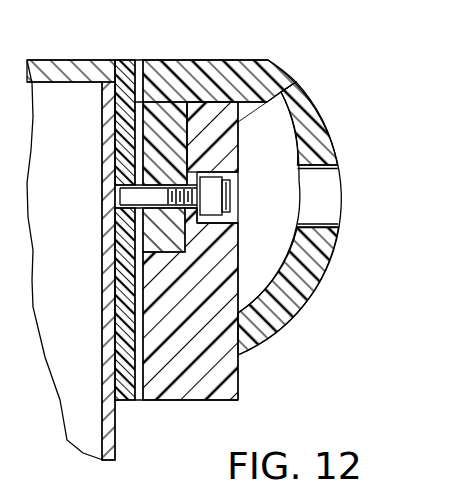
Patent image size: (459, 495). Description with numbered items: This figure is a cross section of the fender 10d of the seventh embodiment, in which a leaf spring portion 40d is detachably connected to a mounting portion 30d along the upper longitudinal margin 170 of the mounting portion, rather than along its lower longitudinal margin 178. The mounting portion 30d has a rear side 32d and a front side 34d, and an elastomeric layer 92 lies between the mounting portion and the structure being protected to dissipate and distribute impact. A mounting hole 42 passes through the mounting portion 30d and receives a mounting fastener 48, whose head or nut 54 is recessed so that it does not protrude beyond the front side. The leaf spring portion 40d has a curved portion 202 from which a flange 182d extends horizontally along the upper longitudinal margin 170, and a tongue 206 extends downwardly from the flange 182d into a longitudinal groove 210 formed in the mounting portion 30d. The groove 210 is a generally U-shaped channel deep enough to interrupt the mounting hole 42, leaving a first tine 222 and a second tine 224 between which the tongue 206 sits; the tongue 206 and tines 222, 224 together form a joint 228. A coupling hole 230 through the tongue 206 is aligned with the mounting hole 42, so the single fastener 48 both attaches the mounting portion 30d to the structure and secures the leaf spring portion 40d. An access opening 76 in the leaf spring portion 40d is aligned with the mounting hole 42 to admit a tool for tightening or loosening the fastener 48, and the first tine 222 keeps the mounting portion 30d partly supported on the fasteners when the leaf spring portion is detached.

The fender 10d is at (336, 52).
The elastomeric layer 92 is at (122, 402).
The rear side 32d is at (130, 311).
The joint 228 is at (141, 54).
The first tine 222 is at (138, 115).
The flange 182d is at (195, 65).
The tongue 206 is at (167, 157).
The upper longitudinal margin 170 is at (226, 85).
The second tine 224 is at (284, 100).
The curved portion 202 is at (323, 139).
The leaf spring portion 40d is at (324, 266).
The access opening 76 is at (323, 192).
The front side 34d is at (246, 270).
The mounting fastener 48 is at (215, 158).
The mounting portion 30d is at (212, 396).
The lower longitudinal margin 178 is at (174, 408).
The longitudinal groove 210 is at (147, 230).
The coupling hole 230 is at (150, 193).
The mounting hole 42 is at (152, 200).
The head or nut 54 is at (212, 197).